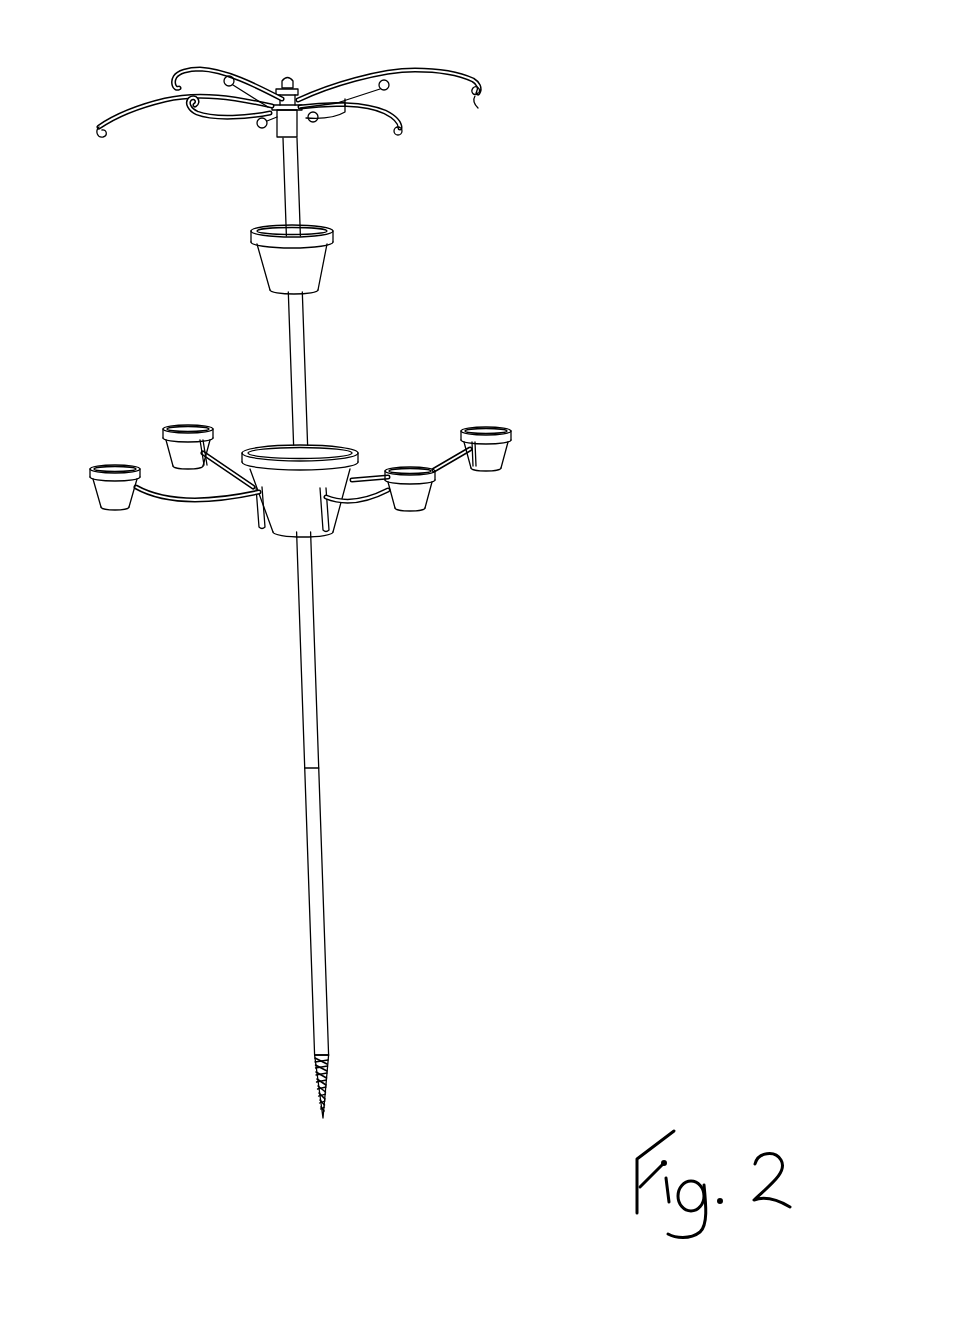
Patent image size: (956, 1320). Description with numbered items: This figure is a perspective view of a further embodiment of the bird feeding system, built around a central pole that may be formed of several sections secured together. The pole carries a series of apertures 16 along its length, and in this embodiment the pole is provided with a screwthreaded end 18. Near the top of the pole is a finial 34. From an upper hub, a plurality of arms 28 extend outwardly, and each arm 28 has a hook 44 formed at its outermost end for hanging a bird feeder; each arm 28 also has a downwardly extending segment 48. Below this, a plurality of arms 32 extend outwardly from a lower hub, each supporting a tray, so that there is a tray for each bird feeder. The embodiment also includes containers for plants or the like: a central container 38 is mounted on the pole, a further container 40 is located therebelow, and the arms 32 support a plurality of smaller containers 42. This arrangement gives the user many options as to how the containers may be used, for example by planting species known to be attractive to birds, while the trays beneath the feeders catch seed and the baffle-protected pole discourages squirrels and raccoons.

The apertures 16 is at (308, 797).
The screwthreaded end 18 is at (352, 1095).
The arms 28 is at (123, 103).
The arms 32 is at (363, 502).
The finial 34 is at (293, 87).
The central container 38 is at (322, 267).
The further container 40 is at (347, 447).
The smaller containers 42 is at (512, 452).
The hook 44 is at (478, 107).
The downwardly extending segment 48 is at (207, 117).